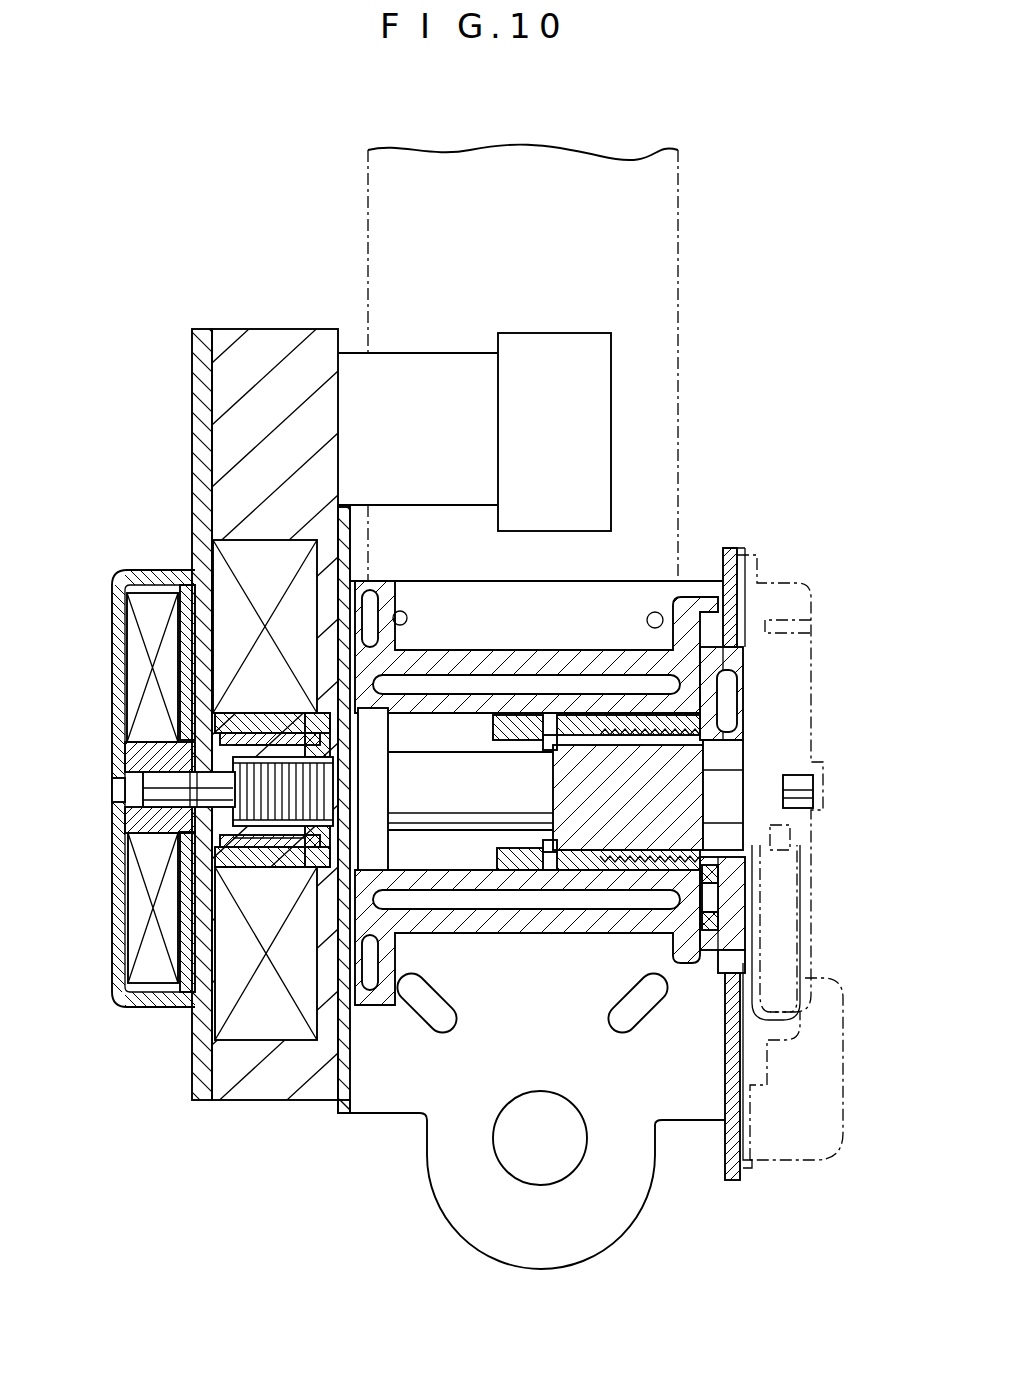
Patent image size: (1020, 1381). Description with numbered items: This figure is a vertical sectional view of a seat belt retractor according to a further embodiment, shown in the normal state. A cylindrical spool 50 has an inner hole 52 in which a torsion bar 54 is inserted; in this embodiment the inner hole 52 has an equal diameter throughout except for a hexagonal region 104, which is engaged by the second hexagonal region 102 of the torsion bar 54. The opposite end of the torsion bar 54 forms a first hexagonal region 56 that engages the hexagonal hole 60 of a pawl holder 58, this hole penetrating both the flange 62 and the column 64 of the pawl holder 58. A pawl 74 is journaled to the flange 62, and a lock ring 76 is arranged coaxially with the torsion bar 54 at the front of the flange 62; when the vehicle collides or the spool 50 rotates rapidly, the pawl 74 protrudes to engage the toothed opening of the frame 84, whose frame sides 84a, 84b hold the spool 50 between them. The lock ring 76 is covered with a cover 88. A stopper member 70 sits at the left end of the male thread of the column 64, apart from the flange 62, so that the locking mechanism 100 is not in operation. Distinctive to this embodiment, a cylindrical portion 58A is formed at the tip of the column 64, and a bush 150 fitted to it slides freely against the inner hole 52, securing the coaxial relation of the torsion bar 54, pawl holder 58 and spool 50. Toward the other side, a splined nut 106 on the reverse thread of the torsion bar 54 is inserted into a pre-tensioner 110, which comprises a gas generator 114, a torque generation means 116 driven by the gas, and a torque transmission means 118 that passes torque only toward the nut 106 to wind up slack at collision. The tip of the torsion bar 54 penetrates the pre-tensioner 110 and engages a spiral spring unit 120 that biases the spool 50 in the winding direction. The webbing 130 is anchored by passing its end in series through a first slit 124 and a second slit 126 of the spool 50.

The spool 50 is at (536, 793).
The inner hole 52 is at (455, 852).
The torsion bar 54 is at (418, 815).
The first hexagonal region 56 is at (720, 780).
The pawl holder 58 is at (793, 690).
The cylindrical portion 58A is at (560, 848).
The hexagonal hole 60 is at (781, 946).
The flange 62 is at (722, 702).
The column 64 is at (650, 862).
The stopper member 70 is at (628, 862).
The pawl 74 is at (712, 900).
The lock ring 76 is at (800, 950).
The frame 84 is at (536, 916).
The frame side 84a is at (728, 1152).
The frame side 84b is at (363, 1100).
The cover 88 is at (813, 750).
The locking mechanism 100 is at (824, 802).
The second hexagonal region 102 is at (377, 789).
The hexagonal region 104 is at (417, 723).
The nut 106 is at (263, 826).
The pre-tensioner 110 is at (185, 646).
The gas generator 114 is at (403, 388).
The torque generation means 116 is at (252, 568).
The torque transmission means 118 is at (243, 712).
The spiral spring unit 120 is at (118, 980).
The first slit 124 is at (482, 694).
The second slit 126 is at (507, 900).
The webbing 130 is at (655, 186).
The bush 150 is at (547, 870).